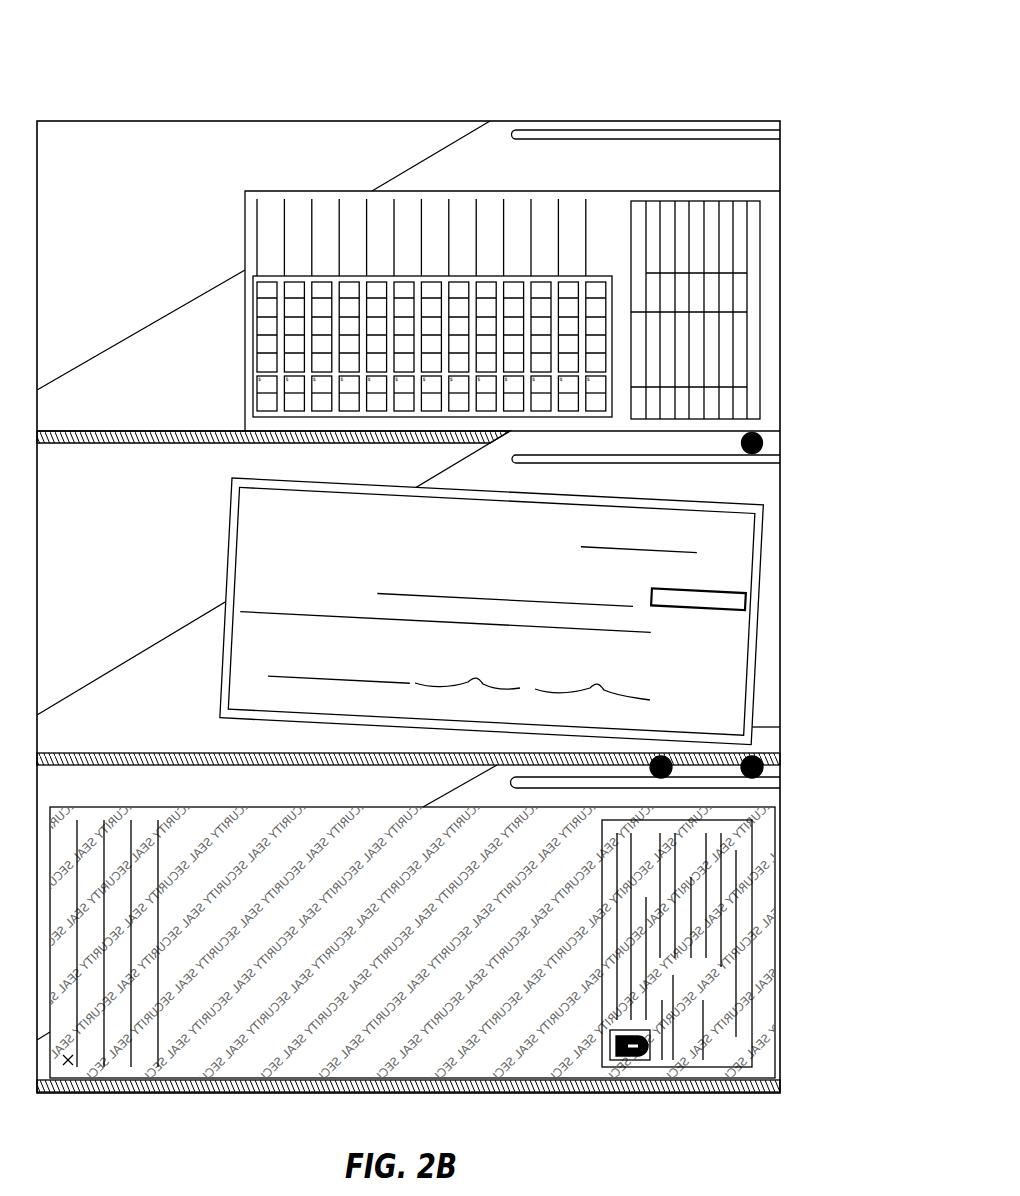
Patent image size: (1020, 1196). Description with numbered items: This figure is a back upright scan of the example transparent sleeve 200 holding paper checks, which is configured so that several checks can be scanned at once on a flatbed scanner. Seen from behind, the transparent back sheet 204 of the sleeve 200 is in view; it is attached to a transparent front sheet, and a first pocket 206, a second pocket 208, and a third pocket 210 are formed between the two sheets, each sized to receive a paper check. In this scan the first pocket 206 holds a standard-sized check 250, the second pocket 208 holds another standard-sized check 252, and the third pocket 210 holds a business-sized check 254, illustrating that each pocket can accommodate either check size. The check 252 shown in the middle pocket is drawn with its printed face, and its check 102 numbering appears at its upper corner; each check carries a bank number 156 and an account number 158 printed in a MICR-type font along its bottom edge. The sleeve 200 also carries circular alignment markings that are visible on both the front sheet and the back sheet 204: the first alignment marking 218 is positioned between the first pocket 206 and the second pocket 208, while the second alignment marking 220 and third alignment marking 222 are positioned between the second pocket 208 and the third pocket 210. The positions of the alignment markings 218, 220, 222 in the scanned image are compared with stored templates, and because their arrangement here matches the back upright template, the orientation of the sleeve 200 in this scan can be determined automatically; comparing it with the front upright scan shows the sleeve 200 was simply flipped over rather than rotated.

The transparent sleeve 200 is at (590, 84).
The transparent back sheet 204 is at (130, 148).
The standard-sized paper check 250 is at (305, 191).
The first pocket 206 is at (722, 172).
The first alignment marking 218 is at (770, 445).
The standard-sized paper check 252 is at (460, 602).
The second pocket 208 is at (722, 487).
The check 102 is at (491, 611).
The bank number 156 is at (470, 679).
The account number 158 is at (594, 684).
The third alignment marking 222 is at (664, 757).
The second alignment marking 220 is at (770, 768).
The third pocket 210 is at (722, 797).
The business-sized paper check 254 is at (243, 807).